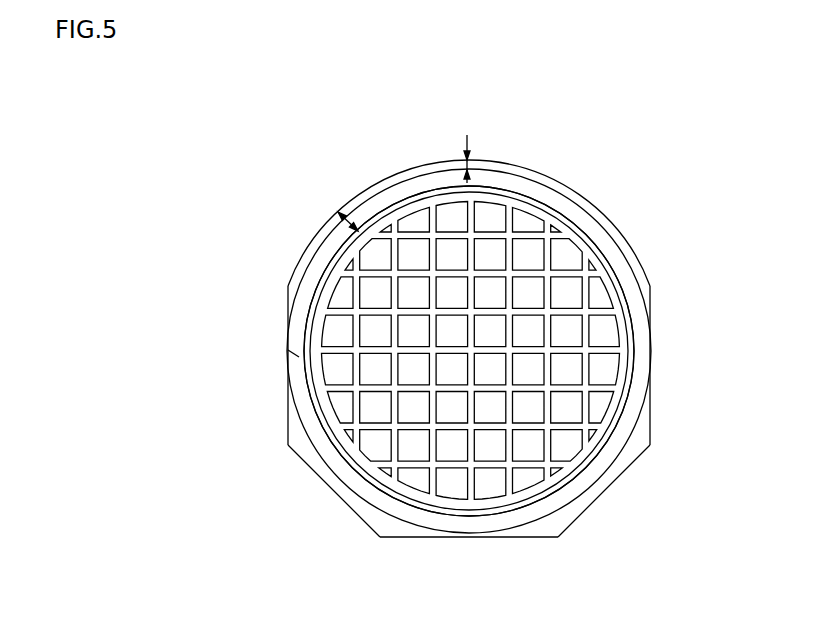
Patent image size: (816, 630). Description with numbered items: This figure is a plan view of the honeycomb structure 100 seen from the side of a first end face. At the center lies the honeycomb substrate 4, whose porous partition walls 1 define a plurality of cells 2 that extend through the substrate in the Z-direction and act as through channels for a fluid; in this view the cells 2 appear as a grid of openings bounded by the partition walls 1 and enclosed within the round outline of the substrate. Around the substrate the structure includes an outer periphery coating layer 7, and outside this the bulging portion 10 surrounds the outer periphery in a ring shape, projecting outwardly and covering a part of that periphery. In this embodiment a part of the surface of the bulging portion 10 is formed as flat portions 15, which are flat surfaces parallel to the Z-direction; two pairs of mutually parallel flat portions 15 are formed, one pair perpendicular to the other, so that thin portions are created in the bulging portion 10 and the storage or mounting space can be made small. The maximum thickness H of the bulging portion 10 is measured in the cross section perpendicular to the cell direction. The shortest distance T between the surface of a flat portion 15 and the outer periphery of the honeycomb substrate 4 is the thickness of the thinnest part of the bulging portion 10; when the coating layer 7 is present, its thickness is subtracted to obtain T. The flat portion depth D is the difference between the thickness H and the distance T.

The honeycomb structure 100 is at (641, 92).
The partition walls 1 is at (388, 432).
The cells 2 is at (570, 338).
The honeycomb substrate 4 is at (585, 238).
The outer periphery coating layer 7 is at (612, 437).
The bulging portion 10 is at (646, 263).
The flat portion 15 is at (651, 303).
The maximum thickness of the bulging portion H is at (350, 222).
The flat portion depth D is at (470, 158).
The distance between the flat portion and the outer periphery of the honeycomb subst T is at (299, 357).